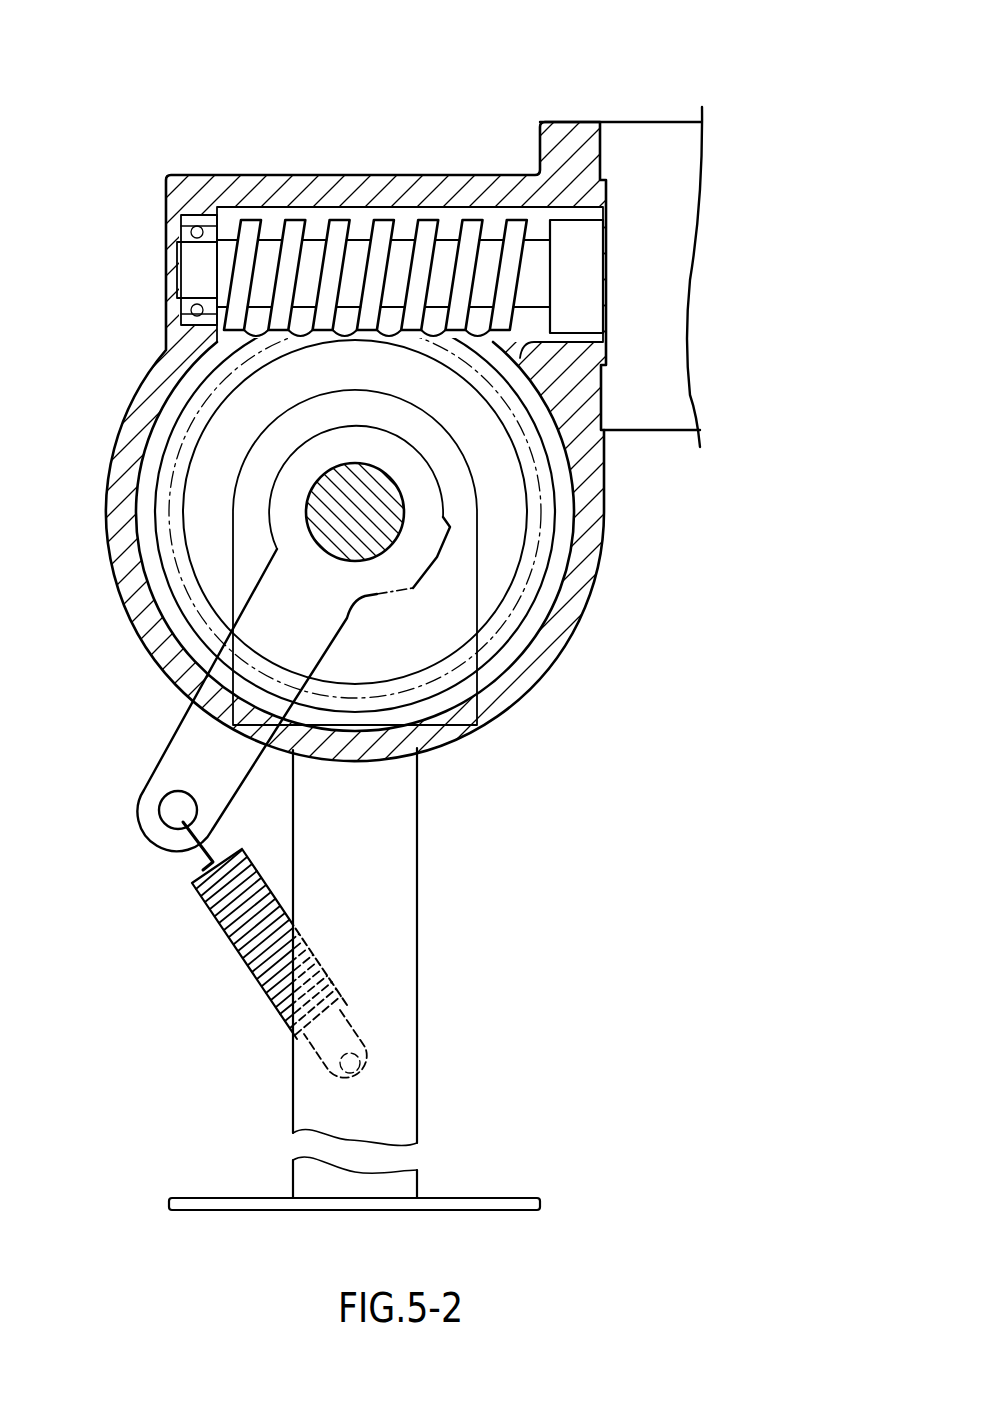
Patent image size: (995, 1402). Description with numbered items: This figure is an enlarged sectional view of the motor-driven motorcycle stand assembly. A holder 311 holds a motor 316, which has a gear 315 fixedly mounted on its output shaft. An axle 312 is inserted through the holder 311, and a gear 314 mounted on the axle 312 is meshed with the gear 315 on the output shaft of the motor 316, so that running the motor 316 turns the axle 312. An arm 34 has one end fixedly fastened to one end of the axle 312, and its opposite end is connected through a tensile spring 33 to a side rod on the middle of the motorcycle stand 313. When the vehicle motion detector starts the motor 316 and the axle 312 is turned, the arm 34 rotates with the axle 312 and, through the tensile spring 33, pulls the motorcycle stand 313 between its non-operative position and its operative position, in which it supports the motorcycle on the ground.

The holder 311 is at (594, 537).
The axle 312 is at (391, 540).
The motorcycle stand 313 is at (393, 943).
The gear 314 is at (283, 342).
The gear 315 is at (384, 232).
The motor 316 is at (653, 142).
The tensile spring 33 is at (247, 970).
The arm 34 is at (185, 745).